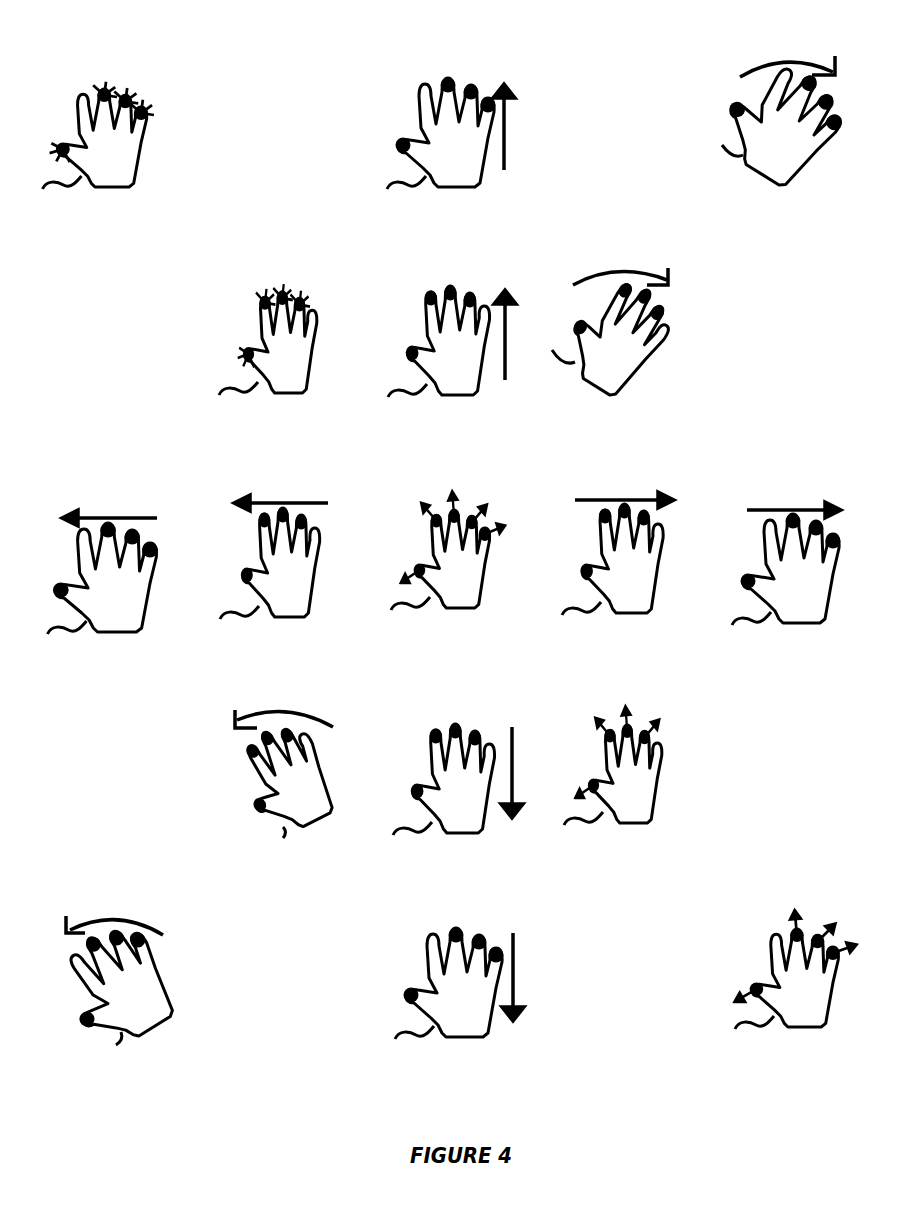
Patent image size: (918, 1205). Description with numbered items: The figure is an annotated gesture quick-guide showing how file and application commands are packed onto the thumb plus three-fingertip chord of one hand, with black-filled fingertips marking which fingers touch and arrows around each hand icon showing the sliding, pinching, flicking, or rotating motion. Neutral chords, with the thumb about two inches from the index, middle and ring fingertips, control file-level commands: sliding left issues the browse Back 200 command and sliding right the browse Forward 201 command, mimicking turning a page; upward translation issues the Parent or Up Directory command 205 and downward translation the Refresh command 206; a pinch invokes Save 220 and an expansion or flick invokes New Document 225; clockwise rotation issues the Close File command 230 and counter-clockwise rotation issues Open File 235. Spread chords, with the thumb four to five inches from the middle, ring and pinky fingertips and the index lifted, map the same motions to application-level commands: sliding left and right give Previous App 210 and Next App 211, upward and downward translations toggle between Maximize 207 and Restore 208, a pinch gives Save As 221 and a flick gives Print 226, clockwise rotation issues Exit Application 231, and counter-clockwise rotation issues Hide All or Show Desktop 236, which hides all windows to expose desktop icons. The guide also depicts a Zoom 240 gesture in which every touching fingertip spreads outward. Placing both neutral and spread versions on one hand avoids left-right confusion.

The Save As command 221 is at (98, 133).
The Maximize command 207 is at (451, 129).
The Exit Application command 231 is at (781, 125).
The Save command 220 is at (268, 339).
The Parent or Up Directory command 205 is at (452, 337).
The Close File command 230 is at (617, 335).
The Previous App command 210 is at (103, 560).
The Back command 200 is at (274, 558).
The zoom gesture 240 is at (449, 556).
The Forward command 201 is at (620, 554).
The Next App command 211 is at (786, 552).
The Open File command 235 is at (285, 776).
The Refresh command 206 is at (458, 774).
The New Document command 225 is at (613, 771).
The Hide All or Show Desktop command 236 is at (116, 983).
The Restore command 208 is at (459, 979).
The Print command 226 is at (795, 975).